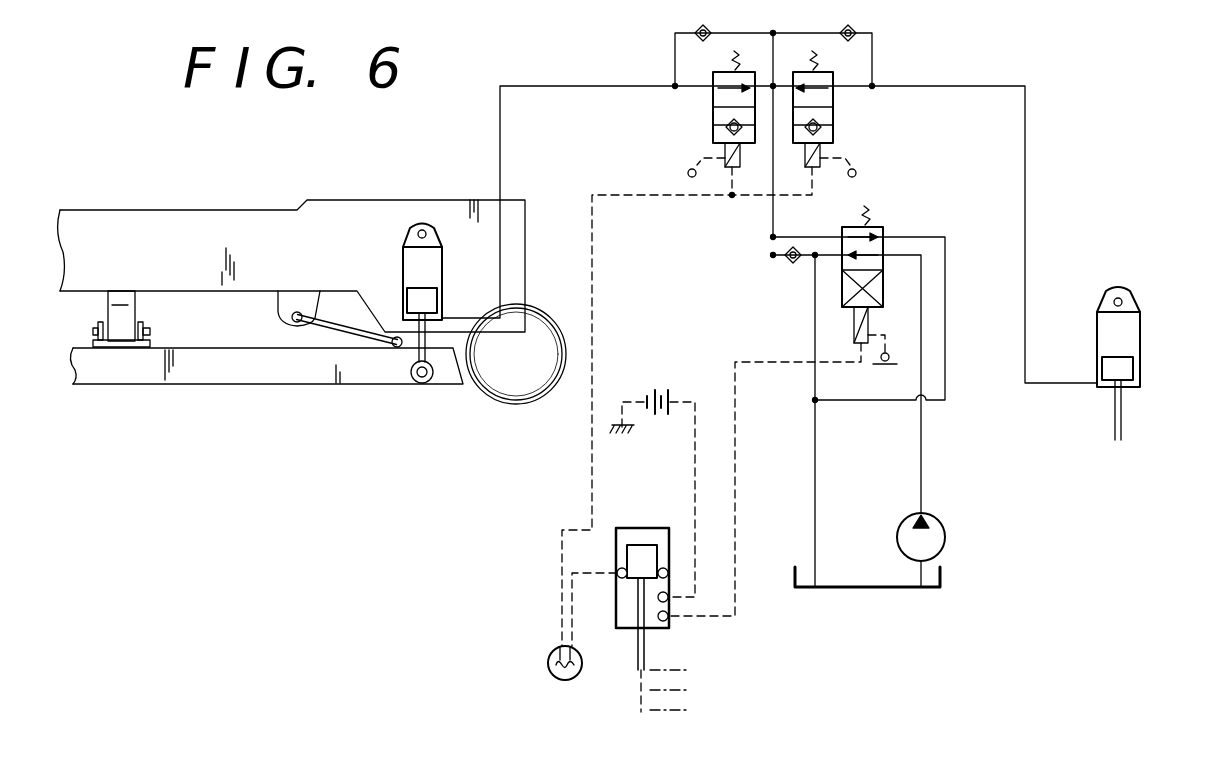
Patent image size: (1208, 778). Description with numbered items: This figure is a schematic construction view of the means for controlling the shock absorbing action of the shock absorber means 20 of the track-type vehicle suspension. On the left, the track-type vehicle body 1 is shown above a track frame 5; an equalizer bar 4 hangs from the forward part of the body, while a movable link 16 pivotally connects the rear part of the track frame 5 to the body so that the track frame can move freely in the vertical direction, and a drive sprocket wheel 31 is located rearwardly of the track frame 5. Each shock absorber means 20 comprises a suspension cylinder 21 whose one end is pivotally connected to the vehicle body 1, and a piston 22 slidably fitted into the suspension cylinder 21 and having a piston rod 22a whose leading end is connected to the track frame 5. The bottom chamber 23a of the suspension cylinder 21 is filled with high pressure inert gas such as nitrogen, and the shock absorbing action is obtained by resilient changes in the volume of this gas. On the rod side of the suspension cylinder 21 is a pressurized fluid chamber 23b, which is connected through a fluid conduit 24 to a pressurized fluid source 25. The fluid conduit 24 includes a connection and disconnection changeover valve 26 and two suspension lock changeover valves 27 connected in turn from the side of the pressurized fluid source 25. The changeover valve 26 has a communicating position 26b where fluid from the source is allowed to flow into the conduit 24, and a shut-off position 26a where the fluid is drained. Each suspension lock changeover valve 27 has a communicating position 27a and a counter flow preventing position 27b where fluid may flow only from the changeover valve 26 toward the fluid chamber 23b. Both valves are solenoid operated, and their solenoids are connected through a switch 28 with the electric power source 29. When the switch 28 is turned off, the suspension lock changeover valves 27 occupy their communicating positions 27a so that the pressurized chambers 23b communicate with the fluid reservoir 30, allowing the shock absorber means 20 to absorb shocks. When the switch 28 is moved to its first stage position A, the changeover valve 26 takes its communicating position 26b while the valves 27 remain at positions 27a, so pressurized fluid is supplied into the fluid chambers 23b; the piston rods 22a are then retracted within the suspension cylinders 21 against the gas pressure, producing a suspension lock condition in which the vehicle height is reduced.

The track-type vehicle body 1 is at (186, 213).
The equalizer bar 4 is at (123, 295).
The track frame 5 is at (183, 374).
The movable link 16 is at (320, 328).
The shock absorber means 20 is at (770, 320).
The suspension cylinder 21 is at (444, 258).
The piston 22 is at (437, 298).
The piston rod 22a is at (435, 375).
The bottom chamber 23a is at (403, 258).
The pressurized fluid chamber 23b is at (403, 312).
The fluid conduit 24 is at (565, 84).
The pressurized fluid source 25 is at (942, 522).
The connection and disconnection changeover valve 26 is at (809, 399).
The disconnecting or shut-off position 26a is at (885, 230).
The connecting or communicating position 26b is at (883, 293).
The suspension lock changeover valve 27 is at (768, 131).
The communicating position 27a is at (713, 96).
The counter flow preventing position 27b is at (713, 127).
The switch 28 is at (668, 527).
The electric power source 29 is at (660, 383).
The fluid reservoir 30 is at (878, 590).
The drive sprocket wheel 31 is at (540, 320).